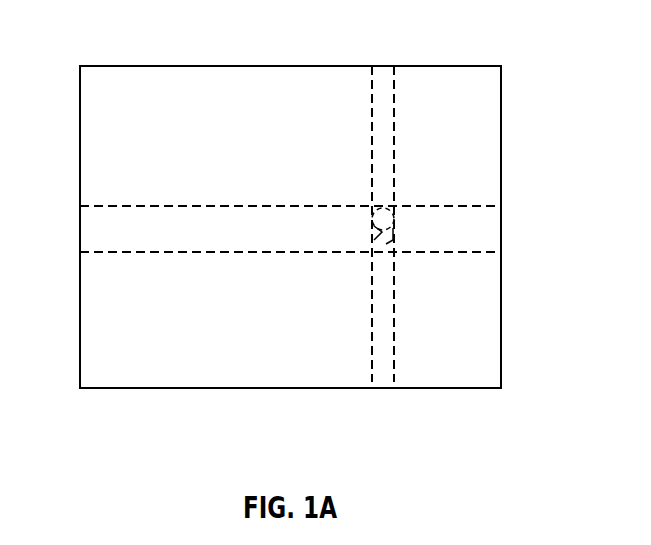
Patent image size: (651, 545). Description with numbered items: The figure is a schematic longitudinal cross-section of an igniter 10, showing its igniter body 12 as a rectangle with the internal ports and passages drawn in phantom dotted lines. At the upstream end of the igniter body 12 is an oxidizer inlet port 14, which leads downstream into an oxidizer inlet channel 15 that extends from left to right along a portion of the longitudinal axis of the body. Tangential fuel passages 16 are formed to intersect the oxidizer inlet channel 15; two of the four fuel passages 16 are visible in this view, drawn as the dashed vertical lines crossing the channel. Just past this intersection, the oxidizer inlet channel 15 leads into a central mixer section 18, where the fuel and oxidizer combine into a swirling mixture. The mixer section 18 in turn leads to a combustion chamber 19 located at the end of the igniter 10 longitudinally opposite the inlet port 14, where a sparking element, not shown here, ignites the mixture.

The igniter 10 is at (531, 47).
The igniter body 12 is at (131, 389).
The oxidizer inlet port 14 is at (79, 222).
The oxidizer inlet channel 15 is at (98, 238).
The tangential fuel passages 16 is at (382, 137).
The central mixer section 18 is at (458, 240).
The combustion chamber 19 is at (501, 228).